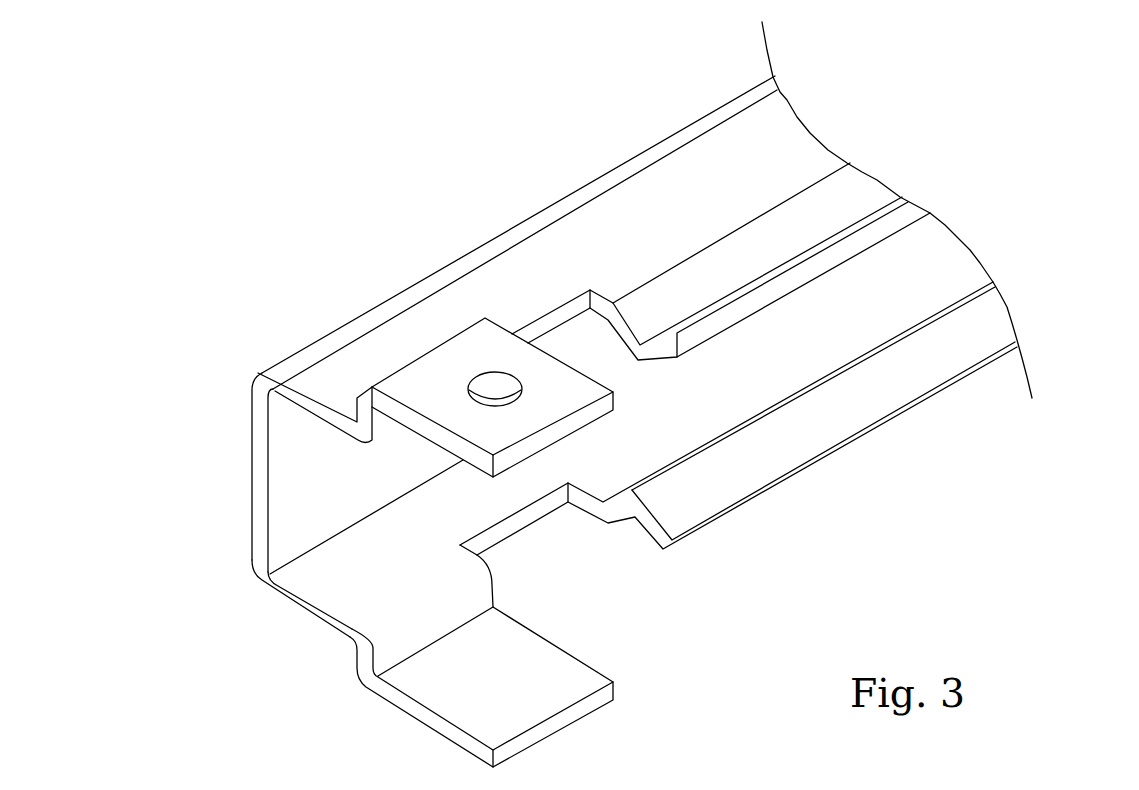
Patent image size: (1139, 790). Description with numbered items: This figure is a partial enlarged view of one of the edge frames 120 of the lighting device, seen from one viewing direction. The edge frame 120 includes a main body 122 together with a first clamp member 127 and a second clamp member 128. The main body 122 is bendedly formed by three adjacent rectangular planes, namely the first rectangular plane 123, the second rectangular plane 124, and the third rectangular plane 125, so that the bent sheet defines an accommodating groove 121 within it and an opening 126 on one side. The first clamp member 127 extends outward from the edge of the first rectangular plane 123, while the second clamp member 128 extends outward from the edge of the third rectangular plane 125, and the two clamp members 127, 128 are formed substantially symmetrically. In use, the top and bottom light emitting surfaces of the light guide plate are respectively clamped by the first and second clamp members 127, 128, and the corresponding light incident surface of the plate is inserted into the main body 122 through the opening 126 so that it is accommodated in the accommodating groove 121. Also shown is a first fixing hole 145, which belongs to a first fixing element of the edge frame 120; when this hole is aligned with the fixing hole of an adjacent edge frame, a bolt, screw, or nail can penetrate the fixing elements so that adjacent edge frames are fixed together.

The edge frame 120 is at (327, 193).
The accommodating groove 121 is at (390, 478).
The main body 122 is at (137, 352).
The first rectangular plane 123 is at (340, 362).
The second rectangular plane 124 is at (290, 447).
The third rectangular plane 125 is at (320, 567).
The opening 126 is at (833, 350).
The first clamp member 127 is at (855, 190).
The second clamp member 128 is at (998, 318).
The first fixing hole 145 is at (493, 340).